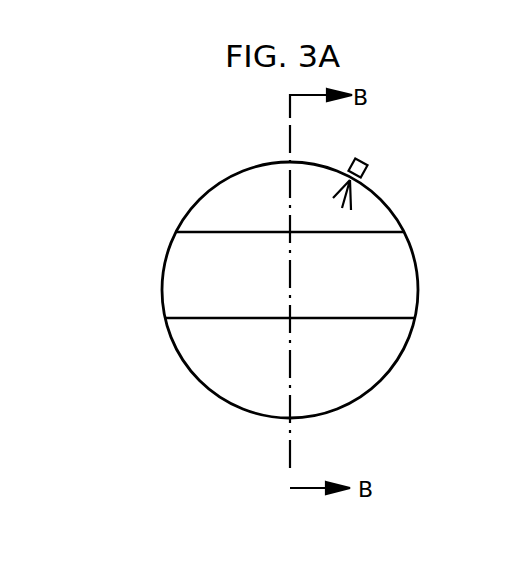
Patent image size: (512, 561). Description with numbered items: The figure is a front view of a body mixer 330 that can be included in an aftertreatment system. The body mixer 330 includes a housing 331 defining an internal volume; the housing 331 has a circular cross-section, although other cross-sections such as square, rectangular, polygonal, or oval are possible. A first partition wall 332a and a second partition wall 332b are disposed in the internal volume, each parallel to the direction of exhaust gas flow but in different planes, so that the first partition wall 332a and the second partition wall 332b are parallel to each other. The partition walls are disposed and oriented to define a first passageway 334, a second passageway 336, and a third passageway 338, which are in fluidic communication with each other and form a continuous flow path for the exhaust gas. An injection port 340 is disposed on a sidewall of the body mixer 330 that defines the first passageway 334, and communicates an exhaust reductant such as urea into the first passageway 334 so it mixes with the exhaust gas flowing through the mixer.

The body mixer 330 is at (178, 170).
The housing 331 is at (400, 363).
The first partition wall 332a is at (222, 231).
The second partition wall 332b is at (397, 317).
The first passageway 334 is at (383, 226).
The second passageway 336 is at (190, 260).
The third passageway 338 is at (307, 400).
The injection port 340 is at (366, 164).